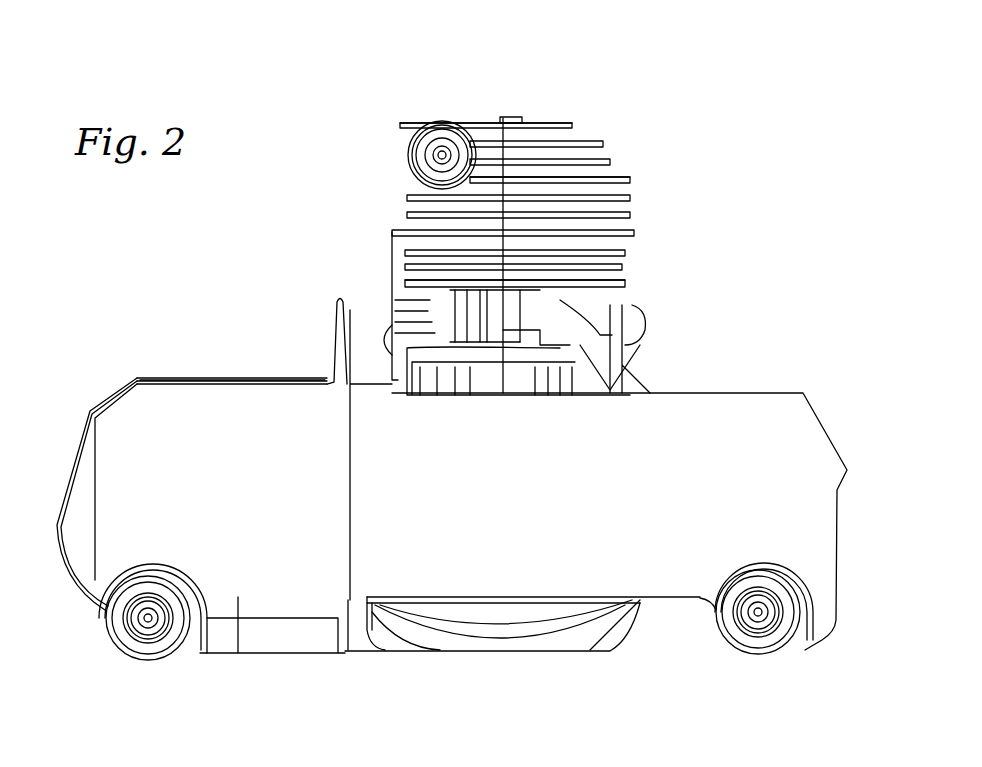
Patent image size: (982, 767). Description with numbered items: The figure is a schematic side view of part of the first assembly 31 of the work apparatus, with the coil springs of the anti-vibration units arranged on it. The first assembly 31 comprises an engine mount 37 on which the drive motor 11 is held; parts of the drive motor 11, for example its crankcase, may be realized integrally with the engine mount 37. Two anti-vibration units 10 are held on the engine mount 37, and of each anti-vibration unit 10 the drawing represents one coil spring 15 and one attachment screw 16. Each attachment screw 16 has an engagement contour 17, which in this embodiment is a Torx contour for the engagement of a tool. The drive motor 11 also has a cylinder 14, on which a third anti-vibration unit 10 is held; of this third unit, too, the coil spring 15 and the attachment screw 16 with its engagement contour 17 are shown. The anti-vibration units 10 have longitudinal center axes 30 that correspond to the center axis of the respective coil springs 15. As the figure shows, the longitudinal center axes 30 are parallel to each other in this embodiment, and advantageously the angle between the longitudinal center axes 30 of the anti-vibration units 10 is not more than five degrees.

The anti-vibration unit 10 is at (404, 132).
The drive motor 11 is at (392, 243).
The cylinder 14 is at (608, 240).
The coil spring 15 is at (422, 118).
The attachment screw 16 is at (440, 155).
The engagement contour 17 is at (450, 145).
The longitudinal center axis 30 is at (438, 160).
The first assembly 31 is at (759, 393).
The engine mount 37 is at (230, 410).